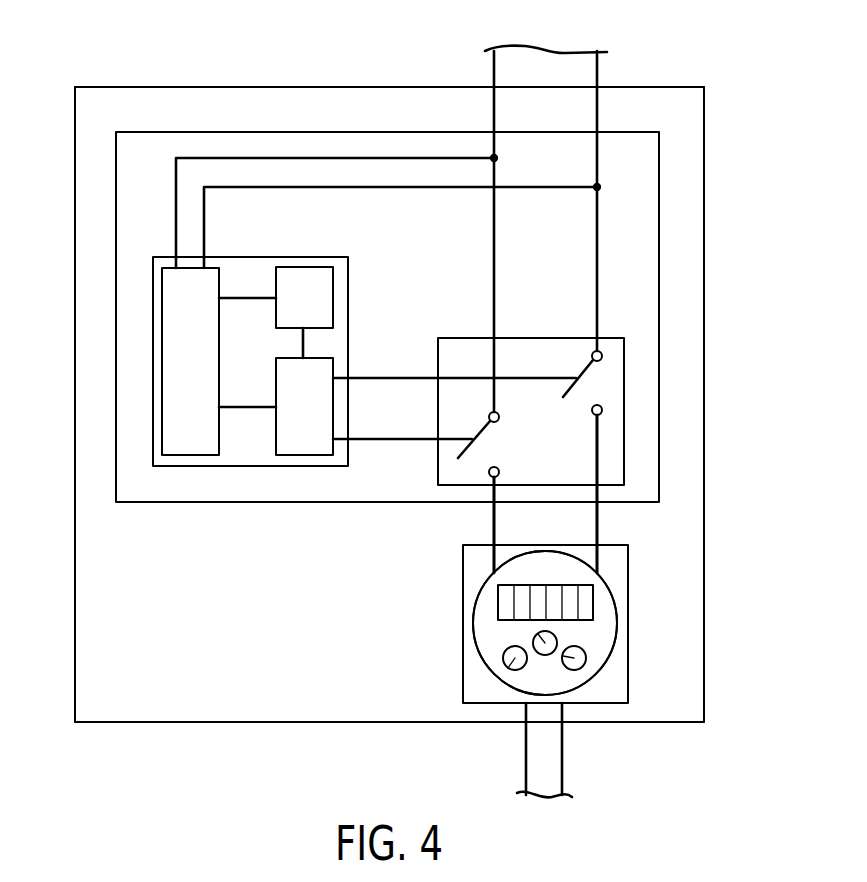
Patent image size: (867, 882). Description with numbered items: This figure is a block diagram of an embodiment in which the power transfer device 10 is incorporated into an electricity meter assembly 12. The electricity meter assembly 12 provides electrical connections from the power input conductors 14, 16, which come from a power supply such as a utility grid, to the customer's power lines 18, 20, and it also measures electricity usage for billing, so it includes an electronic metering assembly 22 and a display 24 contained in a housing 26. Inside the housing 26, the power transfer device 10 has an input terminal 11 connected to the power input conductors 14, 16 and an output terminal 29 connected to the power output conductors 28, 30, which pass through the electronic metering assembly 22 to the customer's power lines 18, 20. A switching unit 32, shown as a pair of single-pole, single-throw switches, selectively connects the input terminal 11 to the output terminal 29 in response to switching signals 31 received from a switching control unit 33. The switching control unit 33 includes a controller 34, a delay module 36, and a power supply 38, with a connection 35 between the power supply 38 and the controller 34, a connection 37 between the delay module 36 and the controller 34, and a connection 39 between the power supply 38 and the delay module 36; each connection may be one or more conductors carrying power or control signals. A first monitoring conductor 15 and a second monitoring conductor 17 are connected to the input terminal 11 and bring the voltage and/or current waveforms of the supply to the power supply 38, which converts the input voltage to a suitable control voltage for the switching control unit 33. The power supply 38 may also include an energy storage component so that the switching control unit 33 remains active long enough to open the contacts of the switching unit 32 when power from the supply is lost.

The power transfer device 10 is at (618, 132).
The input terminal 11 is at (494, 133).
The electricity meter assembly 12 is at (117, 50).
The power input conductor 14 is at (494, 68).
The first monitoring conductor 15 is at (332, 158).
The power input conductor 16 is at (600, 64).
The second monitoring conductor 17 is at (400, 188).
The customer's power line 18 is at (526, 745).
The customer's power line 20 is at (562, 745).
The electronic metering assembly 22 is at (626, 622).
The display 24 is at (492, 668).
The housing 26 is at (704, 563).
The power output conductor 28 is at (490, 530).
The output terminal 29 is at (494, 501).
The power output conductor 30 is at (600, 530).
The switching signals 31 is at (418, 378).
The switching unit 32 is at (532, 338).
The switching control unit 33 is at (250, 257).
The controller 34 is at (304, 455).
The connection 35 is at (250, 409).
The delay module 36 is at (333, 297).
The connection 37 is at (304, 347).
The power supply 38 is at (190, 455).
The connection 39 is at (250, 300).